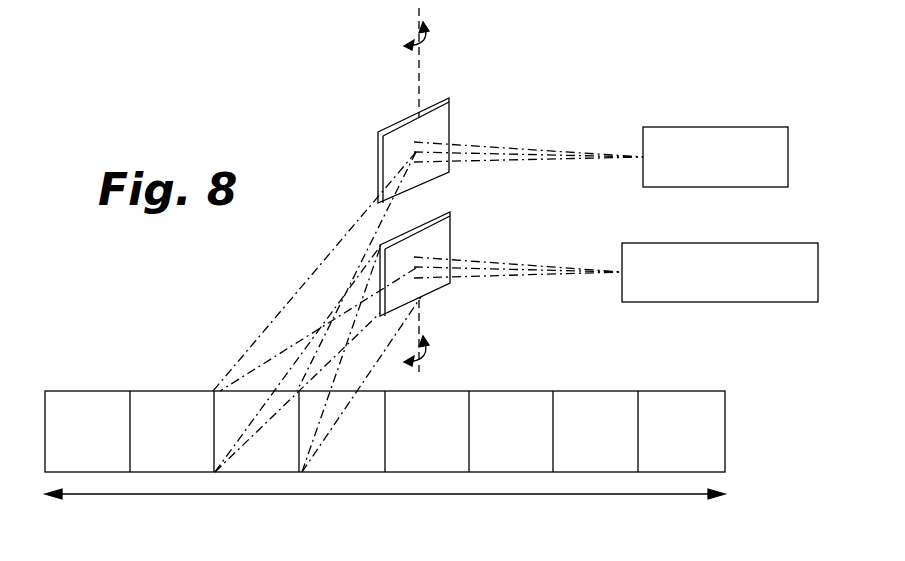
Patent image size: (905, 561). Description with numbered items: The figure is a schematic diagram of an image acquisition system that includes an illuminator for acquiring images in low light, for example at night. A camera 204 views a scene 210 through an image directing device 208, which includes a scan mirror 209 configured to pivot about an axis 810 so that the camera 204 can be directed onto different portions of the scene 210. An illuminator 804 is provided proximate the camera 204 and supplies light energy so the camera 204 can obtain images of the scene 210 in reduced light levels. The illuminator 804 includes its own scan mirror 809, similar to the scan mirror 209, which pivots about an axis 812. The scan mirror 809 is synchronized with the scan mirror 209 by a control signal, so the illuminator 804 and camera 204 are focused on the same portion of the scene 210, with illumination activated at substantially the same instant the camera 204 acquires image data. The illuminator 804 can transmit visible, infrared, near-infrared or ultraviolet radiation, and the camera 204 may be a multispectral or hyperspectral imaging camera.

The camera 204 is at (742, 127).
The image directing device 208 is at (333, 130).
The scan mirror 209 is at (449, 98).
The scene 210 is at (127, 353).
The illuminator 804 is at (720, 243).
The scan mirror 809 is at (449, 212).
The axis 810 is at (412, 98).
The axis 812 is at (423, 320).